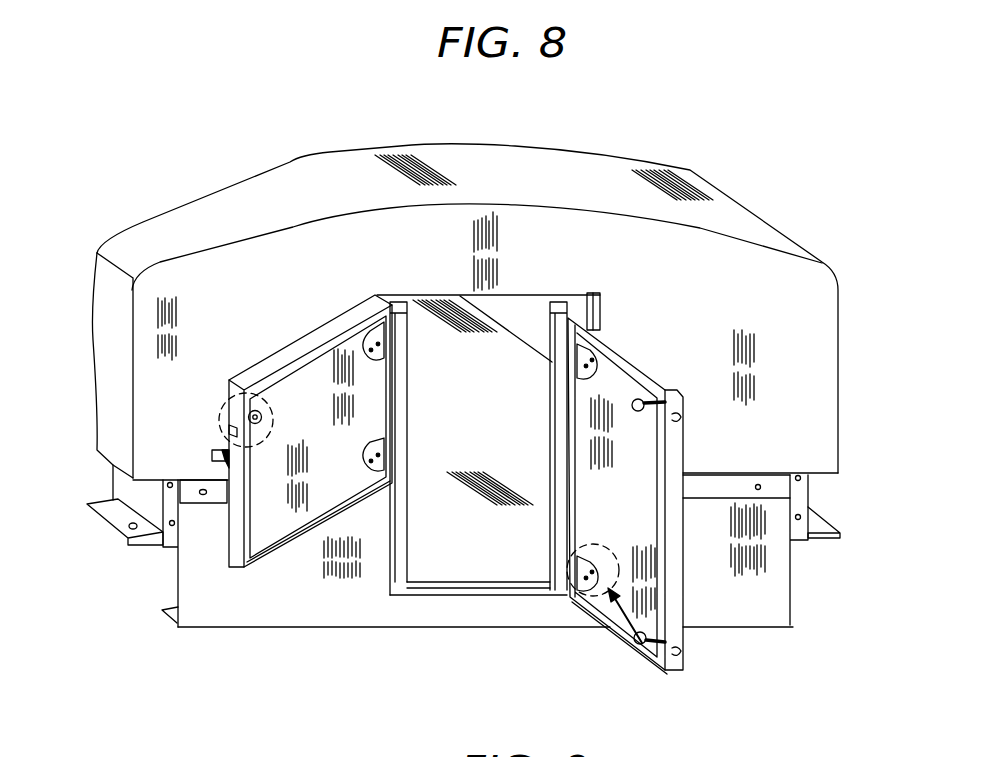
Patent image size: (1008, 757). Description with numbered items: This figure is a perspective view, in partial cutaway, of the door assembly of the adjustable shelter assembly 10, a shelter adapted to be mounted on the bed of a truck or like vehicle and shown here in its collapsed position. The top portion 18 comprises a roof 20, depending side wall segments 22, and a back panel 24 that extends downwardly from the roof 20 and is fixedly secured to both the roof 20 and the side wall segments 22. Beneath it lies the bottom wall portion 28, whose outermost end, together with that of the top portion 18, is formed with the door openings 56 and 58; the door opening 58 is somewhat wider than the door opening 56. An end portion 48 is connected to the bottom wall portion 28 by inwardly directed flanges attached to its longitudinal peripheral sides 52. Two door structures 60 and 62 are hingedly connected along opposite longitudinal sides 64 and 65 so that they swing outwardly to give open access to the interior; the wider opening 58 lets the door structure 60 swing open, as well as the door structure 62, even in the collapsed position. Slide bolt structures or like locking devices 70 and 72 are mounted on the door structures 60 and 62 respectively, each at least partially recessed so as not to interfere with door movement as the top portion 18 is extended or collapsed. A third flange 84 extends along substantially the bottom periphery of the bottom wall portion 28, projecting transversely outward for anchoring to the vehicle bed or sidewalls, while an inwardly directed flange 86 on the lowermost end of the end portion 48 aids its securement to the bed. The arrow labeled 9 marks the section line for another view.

The section line arrow for FIG. 9 is at (640, 643).
The adjustable shelter assembly 10 is at (232, 472).
The top portion 18 is at (757, 181).
The roof 20 is at (563, 161).
The side wall segments 22 is at (122, 392).
The back panel 24 is at (757, 416).
The bottom wall portion 28 is at (96, 487).
The end portion 48 is at (325, 652).
The longitudinal peripheral sides 52 is at (185, 575).
The door opening 56 is at (412, 535).
The door opening 58 is at (592, 293).
The door structure 60 is at (685, 668).
The door structure 62 is at (293, 348).
The hinged longitudinal side 64 is at (582, 430).
The hinged longitudinal side 65 is at (390, 393).
The slide bolt structure 70 is at (648, 400).
The slide bolt structure 72 is at (262, 420).
The third flange 84 is at (120, 518).
The inwardly directed flange 86 is at (163, 612).